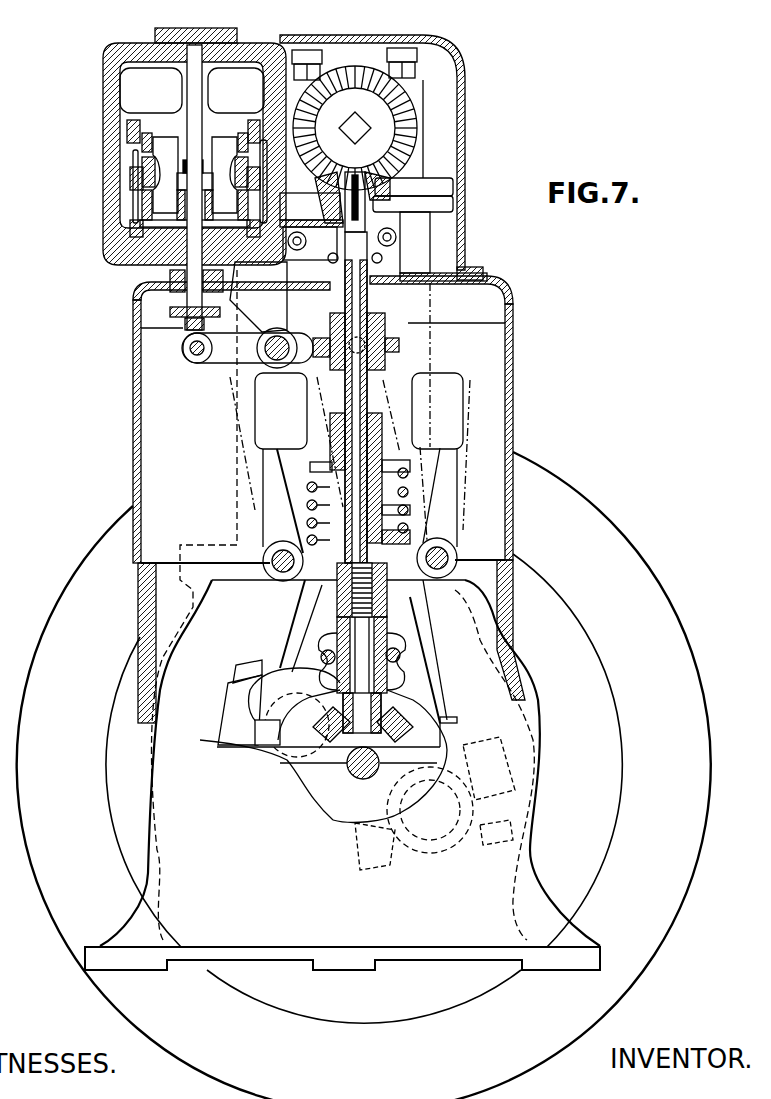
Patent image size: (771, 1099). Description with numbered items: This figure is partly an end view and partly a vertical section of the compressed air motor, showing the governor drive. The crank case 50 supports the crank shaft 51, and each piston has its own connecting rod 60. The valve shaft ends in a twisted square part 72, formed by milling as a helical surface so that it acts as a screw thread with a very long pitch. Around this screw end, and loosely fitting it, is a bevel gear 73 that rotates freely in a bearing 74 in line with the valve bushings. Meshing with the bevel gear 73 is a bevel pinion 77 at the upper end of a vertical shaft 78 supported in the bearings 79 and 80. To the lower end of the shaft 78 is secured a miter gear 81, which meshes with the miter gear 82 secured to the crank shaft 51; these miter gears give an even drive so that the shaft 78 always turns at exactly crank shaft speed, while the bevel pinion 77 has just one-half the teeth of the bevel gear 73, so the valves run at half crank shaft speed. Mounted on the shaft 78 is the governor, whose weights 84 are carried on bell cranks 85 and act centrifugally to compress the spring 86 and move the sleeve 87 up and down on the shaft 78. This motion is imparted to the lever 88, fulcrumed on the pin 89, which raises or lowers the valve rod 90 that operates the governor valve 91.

The crank case 50 is at (342, 775).
The crank shaft 51 is at (260, 708).
The connecting rod 60 is at (310, 630).
The twisted square part 72 is at (352, 117).
The bevel gear 73 is at (405, 103).
The bearing 74 is at (415, 160).
The bevel pinion 77 is at (390, 188).
The shaft 78 is at (360, 398).
The bearing 79 is at (390, 253).
The bearing 80 is at (403, 657).
The miter gear 81 is at (407, 712).
The miter gear 82 is at (347, 773).
The weights 84 is at (360, 463).
The bell cranks 85 is at (362, 546).
The spring 86 is at (306, 503).
The sleeve 87 is at (370, 385).
The lever 88 is at (228, 352).
The pin 89 is at (277, 343).
The valve rod 90 is at (197, 270).
The governor valve 91 is at (157, 198).